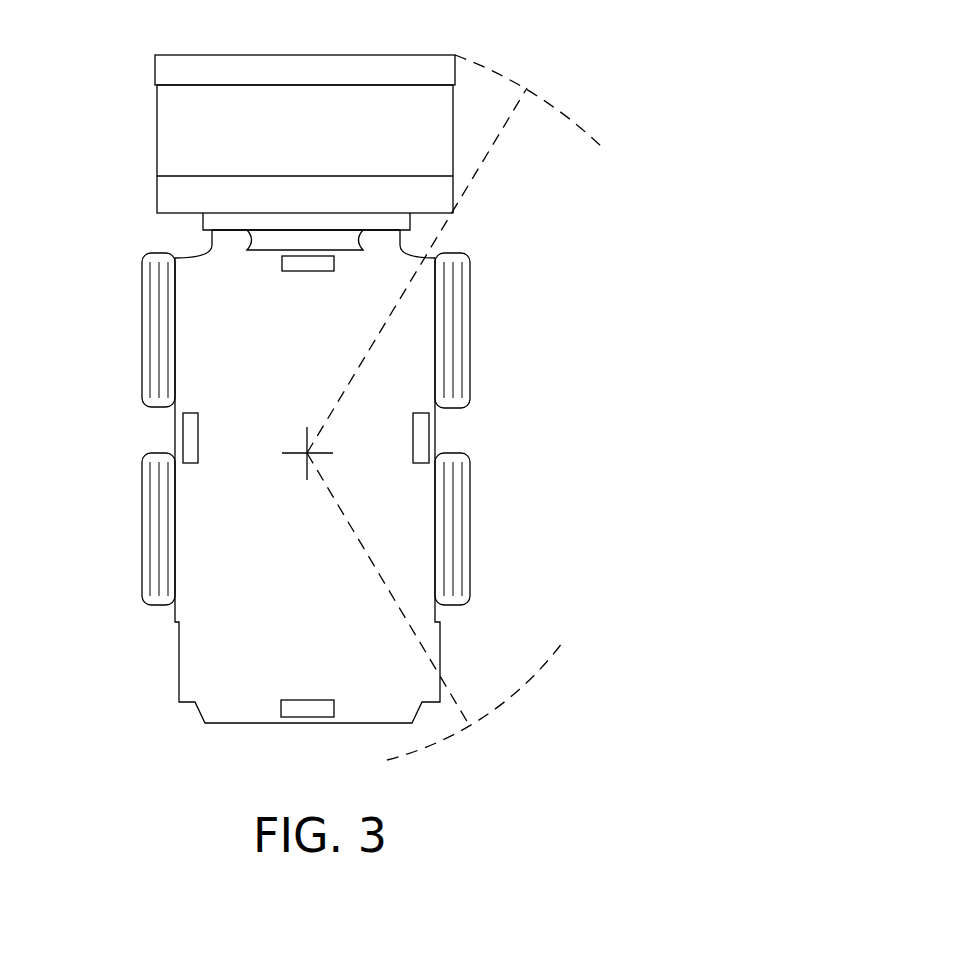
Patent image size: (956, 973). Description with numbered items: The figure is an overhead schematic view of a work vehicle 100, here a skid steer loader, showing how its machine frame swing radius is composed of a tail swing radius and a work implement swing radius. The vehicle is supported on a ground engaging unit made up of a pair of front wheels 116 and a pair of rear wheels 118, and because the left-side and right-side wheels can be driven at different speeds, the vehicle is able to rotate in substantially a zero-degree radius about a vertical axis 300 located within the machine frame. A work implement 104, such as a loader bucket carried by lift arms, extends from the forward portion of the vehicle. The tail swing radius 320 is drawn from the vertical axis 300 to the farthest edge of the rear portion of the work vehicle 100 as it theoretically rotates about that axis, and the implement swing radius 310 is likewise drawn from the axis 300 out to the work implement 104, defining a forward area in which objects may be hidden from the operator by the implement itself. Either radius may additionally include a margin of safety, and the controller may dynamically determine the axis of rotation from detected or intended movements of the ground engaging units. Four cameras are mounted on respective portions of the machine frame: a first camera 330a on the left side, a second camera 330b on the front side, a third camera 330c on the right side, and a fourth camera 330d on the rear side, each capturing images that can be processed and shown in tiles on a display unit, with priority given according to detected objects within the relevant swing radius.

The work vehicle 100 is at (622, 627).
The work implement 104 is at (157, 133).
The front wheels 116 is at (142, 325).
The rear wheels 118 is at (142, 520).
The vertical axis 300 is at (310, 452).
The implement swing radius 310 is at (568, 117).
The tail swing radius 320 is at (505, 700).
The first camera 330a is at (190, 465).
The second camera 330b is at (290, 272).
The third camera 330c is at (420, 465).
The fourth camera 330d is at (307, 700).